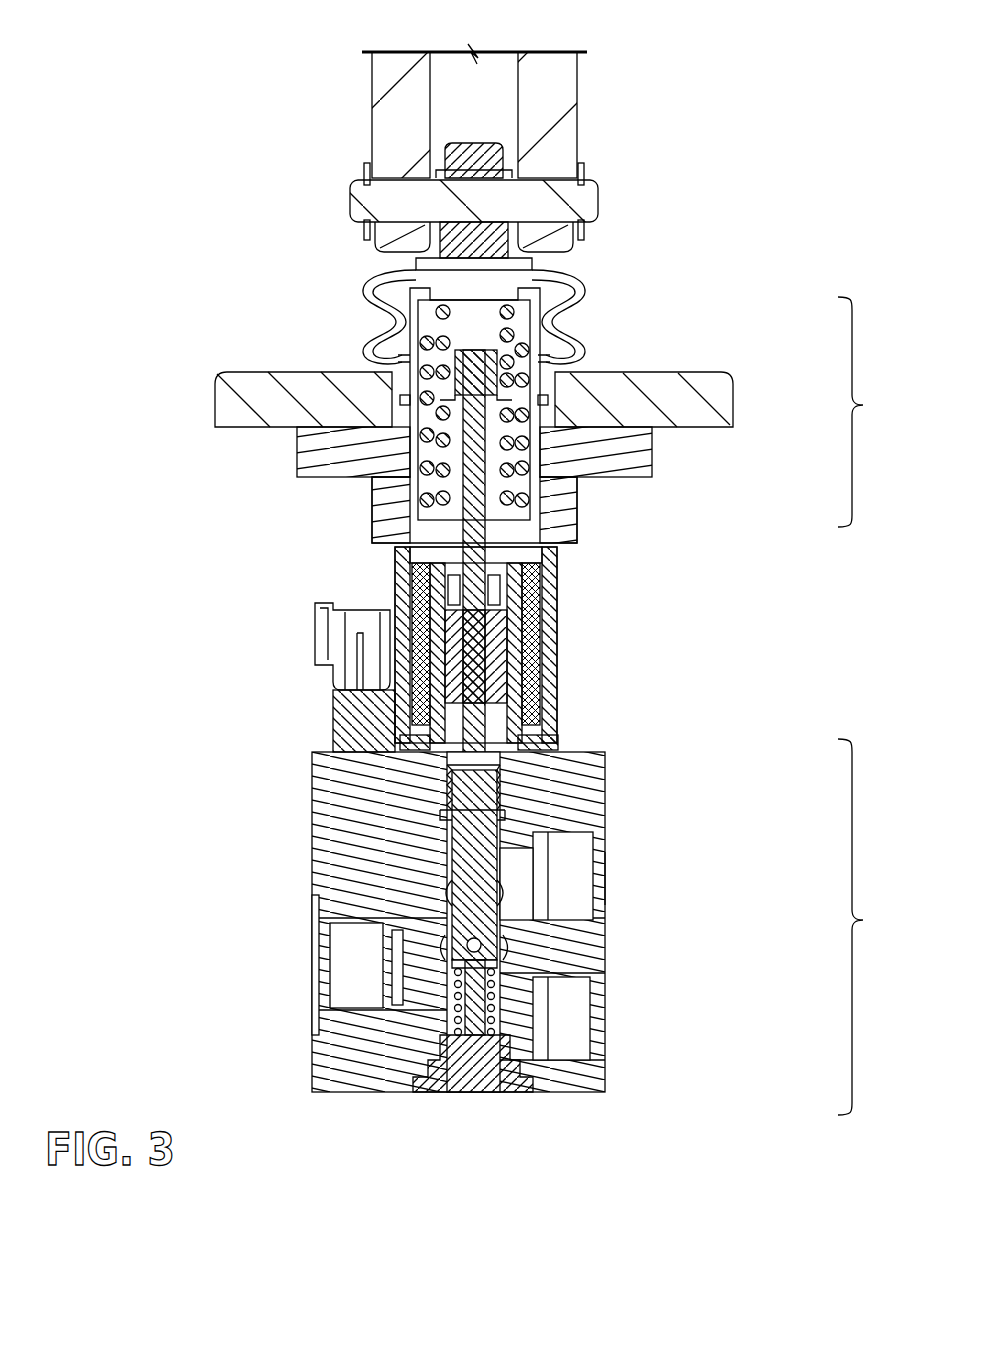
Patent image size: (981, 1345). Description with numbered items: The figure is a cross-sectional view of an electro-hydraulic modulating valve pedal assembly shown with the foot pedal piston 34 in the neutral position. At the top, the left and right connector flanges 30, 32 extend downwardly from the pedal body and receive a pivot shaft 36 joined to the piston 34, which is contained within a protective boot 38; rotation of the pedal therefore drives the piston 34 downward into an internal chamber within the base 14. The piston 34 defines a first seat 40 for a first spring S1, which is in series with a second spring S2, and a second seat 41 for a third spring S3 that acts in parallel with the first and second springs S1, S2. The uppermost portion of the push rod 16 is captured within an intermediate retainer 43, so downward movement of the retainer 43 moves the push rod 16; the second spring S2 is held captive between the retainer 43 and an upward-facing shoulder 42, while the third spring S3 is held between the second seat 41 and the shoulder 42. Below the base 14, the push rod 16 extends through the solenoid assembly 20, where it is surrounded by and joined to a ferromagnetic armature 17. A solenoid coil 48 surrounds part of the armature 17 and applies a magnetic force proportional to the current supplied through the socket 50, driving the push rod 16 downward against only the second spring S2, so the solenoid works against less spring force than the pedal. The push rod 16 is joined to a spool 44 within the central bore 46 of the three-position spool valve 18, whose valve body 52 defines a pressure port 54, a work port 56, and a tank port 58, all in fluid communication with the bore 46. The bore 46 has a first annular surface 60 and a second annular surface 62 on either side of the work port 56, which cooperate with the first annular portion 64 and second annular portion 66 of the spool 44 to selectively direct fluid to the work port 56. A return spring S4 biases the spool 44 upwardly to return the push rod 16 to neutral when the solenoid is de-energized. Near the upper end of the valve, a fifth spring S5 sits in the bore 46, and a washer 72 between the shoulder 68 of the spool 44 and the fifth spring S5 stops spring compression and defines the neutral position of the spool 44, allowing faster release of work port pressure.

The base 14 is at (559, 412).
The push rod 16 is at (493, 596).
The magnetic armature 17 is at (495, 655).
The spool valve 18 is at (870, 927).
The solenoid assembly 20 is at (557, 655).
The left connector flange 30 is at (377, 118).
The right connector flange 32 is at (577, 118).
The foot pedal piston 34 is at (535, 292).
The pivot shaft 36 is at (600, 198).
The protective boot 38 is at (588, 316).
The first seat 40 is at (427, 338).
The second seat 41 is at (545, 342).
The upward-facing shoulder 42 is at (297, 458).
The intermediate retainer 43 is at (440, 398).
The spool 44 is at (470, 848).
The central bore 46 is at (593, 853).
The solenoid coil 48 is at (557, 569).
The socket 50 is at (357, 610).
The valve body 52 is at (305, 826).
The pressure port 54 is at (605, 876).
The work port 56 is at (312, 1018).
The tank port 58 is at (605, 1040).
The first annular surface 60 is at (465, 946).
The second annular surface 62 is at (460, 958).
The first annular portion 64 is at (490, 947).
The second annular portion 66 is at (520, 1002).
The shoulder 68 is at (447, 792).
The washer 72 is at (505, 786).
The first spring S1 is at (510, 303).
The second spring S2 is at (522, 482).
The third spring S3 is at (520, 380).
The return spring S4 is at (455, 1025).
The fifth spring S5 is at (333, 750).